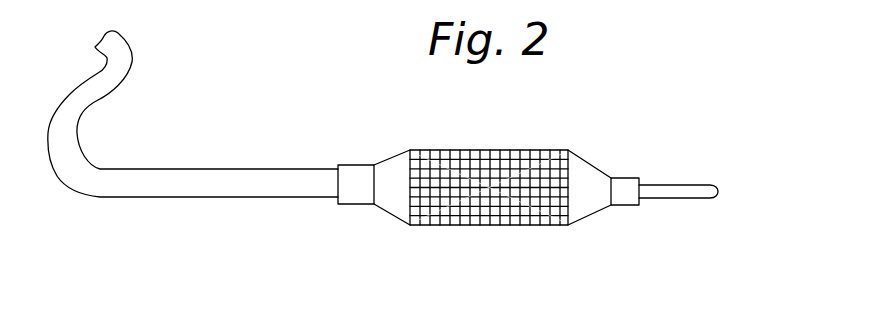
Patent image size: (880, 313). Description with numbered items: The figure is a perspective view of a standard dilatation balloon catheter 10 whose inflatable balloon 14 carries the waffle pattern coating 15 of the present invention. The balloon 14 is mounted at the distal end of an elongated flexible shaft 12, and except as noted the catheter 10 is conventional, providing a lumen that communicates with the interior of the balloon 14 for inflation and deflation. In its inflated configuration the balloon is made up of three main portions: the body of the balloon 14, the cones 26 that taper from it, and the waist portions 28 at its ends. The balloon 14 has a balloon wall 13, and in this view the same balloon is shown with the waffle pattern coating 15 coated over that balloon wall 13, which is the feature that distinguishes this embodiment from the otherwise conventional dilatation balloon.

The dilatation balloon catheter 10 is at (496, 196).
The elongated flexible shaft 12 is at (242, 178).
The balloon wall 13 is at (432, 156).
The inflatable balloon 14 is at (485, 168).
The waffle pattern coating 15 is at (530, 218).
The cones 26 is at (390, 197).
The waist portions 28 is at (356, 177).